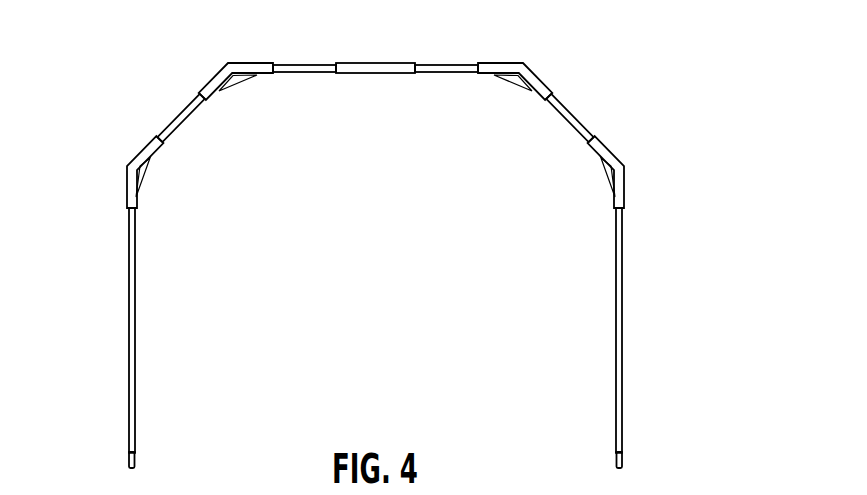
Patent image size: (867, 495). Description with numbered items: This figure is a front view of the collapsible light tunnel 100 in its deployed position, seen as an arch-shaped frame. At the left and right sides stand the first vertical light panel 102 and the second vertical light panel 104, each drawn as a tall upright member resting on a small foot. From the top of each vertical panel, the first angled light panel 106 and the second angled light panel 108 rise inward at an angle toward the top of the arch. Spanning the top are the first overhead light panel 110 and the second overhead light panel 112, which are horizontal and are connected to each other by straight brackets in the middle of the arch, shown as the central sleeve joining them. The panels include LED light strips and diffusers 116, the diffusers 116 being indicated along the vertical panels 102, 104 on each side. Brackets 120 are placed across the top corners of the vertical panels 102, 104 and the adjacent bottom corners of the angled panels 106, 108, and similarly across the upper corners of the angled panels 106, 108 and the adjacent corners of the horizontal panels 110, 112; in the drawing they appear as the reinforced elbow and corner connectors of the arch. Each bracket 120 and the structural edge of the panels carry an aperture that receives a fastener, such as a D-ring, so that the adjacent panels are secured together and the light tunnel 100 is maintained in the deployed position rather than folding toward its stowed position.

The collapsible light tunnel 100 is at (630, 38).
The first vertical light panel 102 is at (125, 328).
The second vertical light panel 104 is at (623, 332).
The first angled light panel 106 is at (180, 112).
The second angled light panel 108 is at (572, 113).
The first overhead light panel 110 is at (303, 63).
The second overhead light panel 112 is at (447, 63).
The diffuser 116 is at (135, 258).
The bracket 120 is at (132, 193).